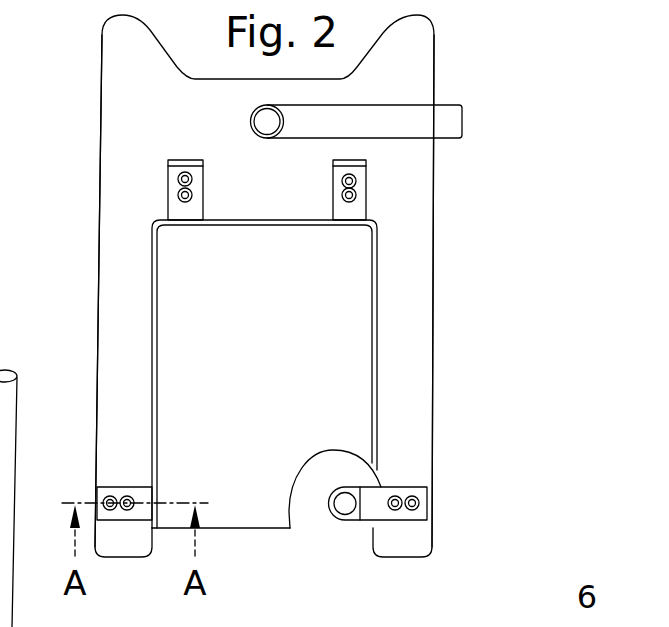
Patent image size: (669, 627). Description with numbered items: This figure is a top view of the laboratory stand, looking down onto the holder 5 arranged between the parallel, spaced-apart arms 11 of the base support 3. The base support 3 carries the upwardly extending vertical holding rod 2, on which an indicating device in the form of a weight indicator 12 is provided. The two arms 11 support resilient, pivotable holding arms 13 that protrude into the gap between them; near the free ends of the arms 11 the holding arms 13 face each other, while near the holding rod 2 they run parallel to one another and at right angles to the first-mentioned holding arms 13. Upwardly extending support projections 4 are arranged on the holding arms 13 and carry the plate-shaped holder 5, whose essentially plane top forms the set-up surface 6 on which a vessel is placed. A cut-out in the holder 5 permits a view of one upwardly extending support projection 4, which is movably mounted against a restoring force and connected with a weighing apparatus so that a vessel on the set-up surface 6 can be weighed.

The holding rod 2 is at (265, 121).
The base support 3 is at (94, 265).
The support projection 4 is at (345, 506).
The holder 5 is at (256, 527).
The set-up surface 6 is at (326, 345).
The arm 11 is at (122, 325).
The weight indicator 12 is at (393, 103).
The holding arm 13 is at (348, 214).